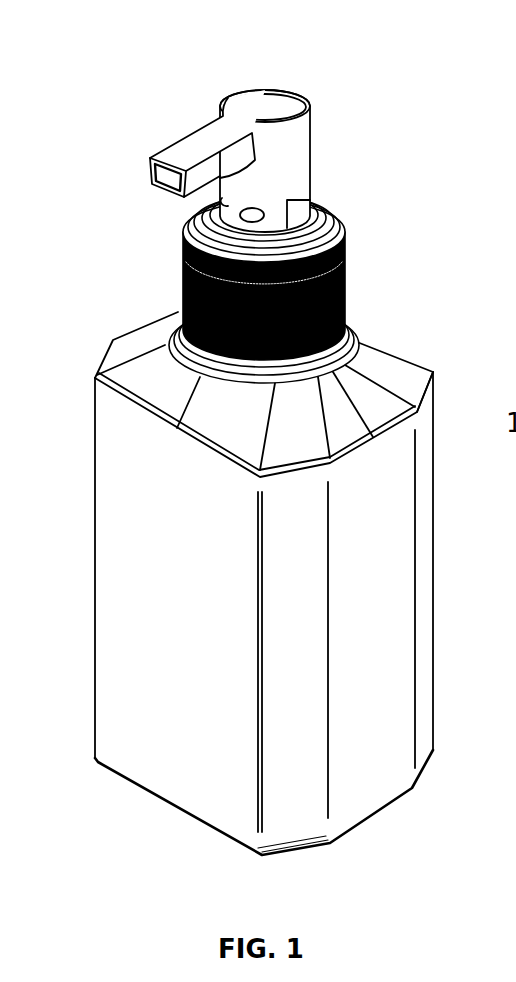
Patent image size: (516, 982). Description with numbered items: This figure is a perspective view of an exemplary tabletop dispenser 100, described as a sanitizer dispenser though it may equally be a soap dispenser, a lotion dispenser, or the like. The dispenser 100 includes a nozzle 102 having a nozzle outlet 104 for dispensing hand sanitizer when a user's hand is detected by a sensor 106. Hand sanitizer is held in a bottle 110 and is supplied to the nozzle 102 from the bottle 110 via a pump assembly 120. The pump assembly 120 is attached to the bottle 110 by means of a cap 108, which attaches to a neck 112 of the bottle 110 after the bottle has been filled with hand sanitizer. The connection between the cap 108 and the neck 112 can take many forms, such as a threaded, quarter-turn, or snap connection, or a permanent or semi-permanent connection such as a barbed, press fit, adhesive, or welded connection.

The tabletop dispenser 100 is at (86, 76).
The nozzle 102 is at (192, 150).
The nozzle outlet 104 is at (153, 182).
The sensor 106 is at (265, 198).
The cap 108 is at (345, 275).
The bottle 110 is at (150, 690).
The neck 112 is at (165, 346).
The pump assembly 120 is at (425, 153).